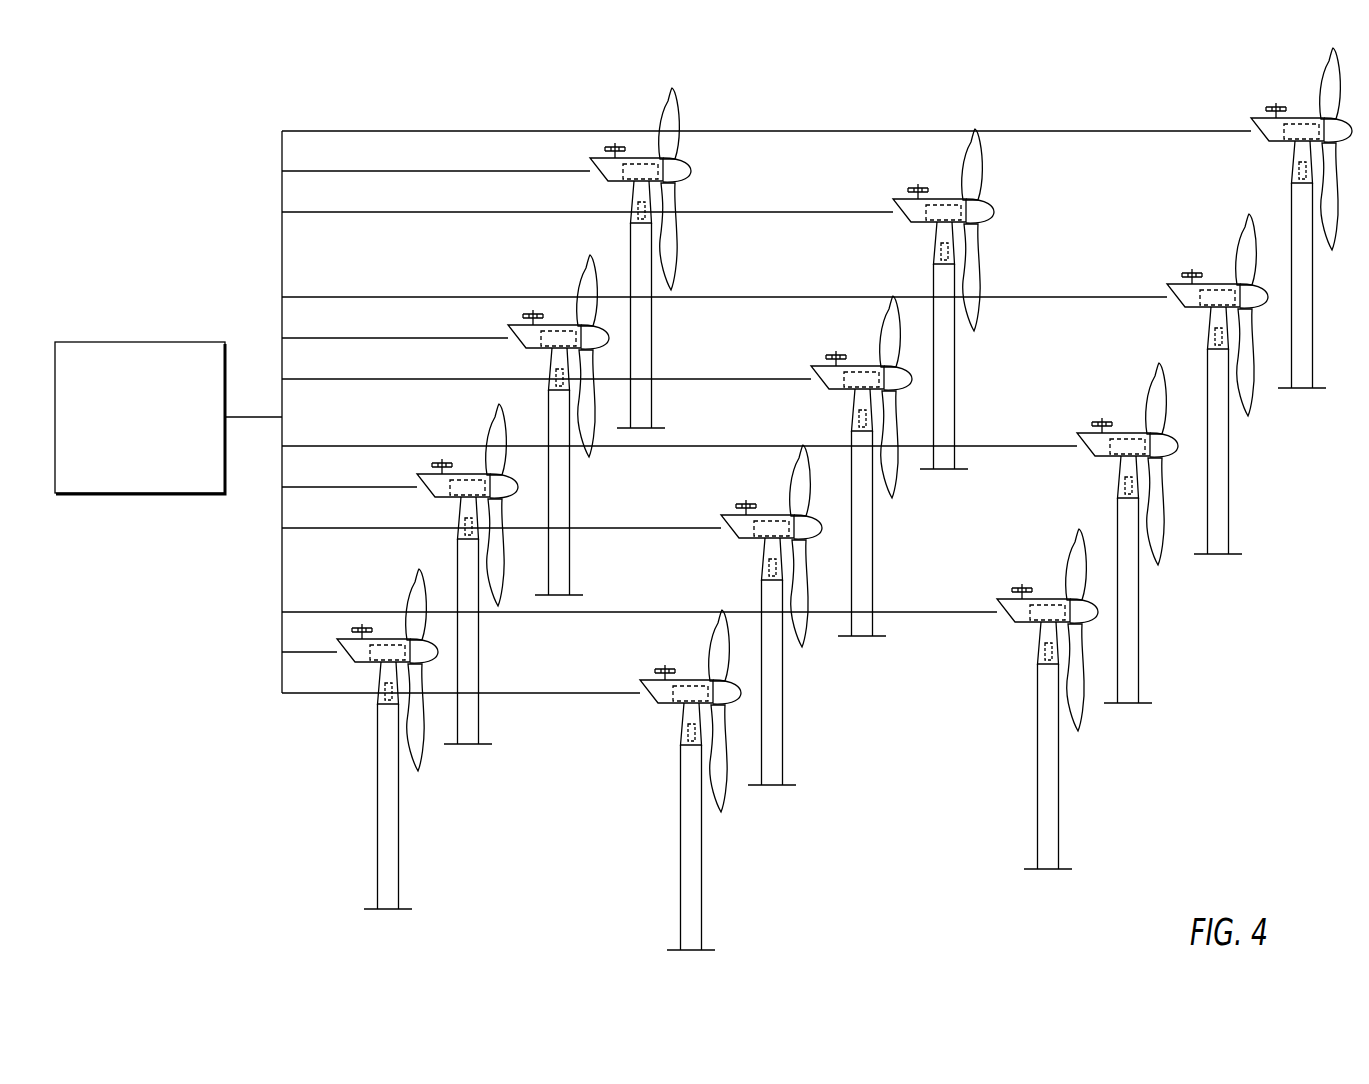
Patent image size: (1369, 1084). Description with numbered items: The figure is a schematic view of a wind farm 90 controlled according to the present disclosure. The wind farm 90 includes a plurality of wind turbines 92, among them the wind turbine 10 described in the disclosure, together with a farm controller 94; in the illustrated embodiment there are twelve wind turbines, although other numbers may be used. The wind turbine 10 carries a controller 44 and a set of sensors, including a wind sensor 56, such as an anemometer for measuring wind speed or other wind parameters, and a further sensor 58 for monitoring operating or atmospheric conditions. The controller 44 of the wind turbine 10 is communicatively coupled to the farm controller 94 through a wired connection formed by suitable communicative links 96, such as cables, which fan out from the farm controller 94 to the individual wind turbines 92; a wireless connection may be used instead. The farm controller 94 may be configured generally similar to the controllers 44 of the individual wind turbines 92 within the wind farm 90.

The wind farm 90 is at (178, 195).
The farm controller 94 is at (151, 427).
The communicative links 96 is at (450, 297).
The wind turbine 10 is at (352, 737).
The controller 44 is at (390, 638).
The wind turbines 92 is at (884, 499).
The wind sensor 56 is at (657, 667).
The sensor 58 is at (676, 732).